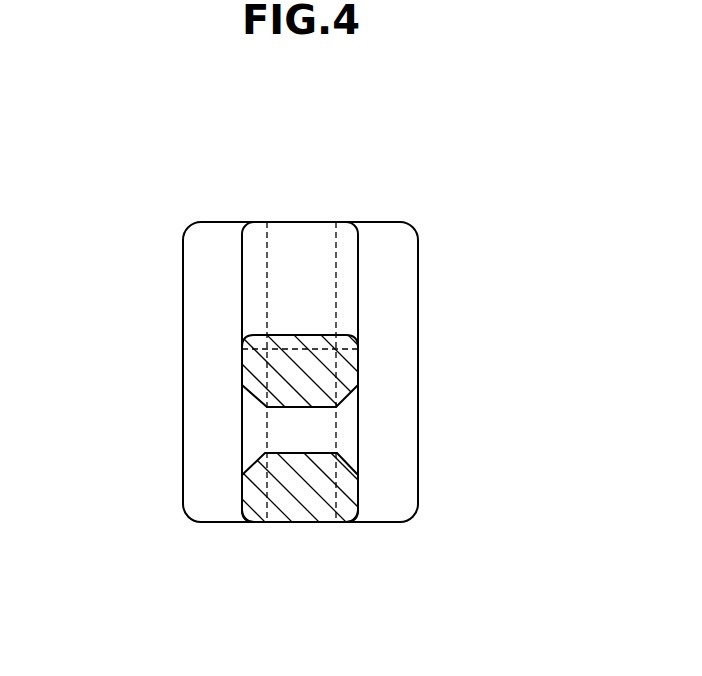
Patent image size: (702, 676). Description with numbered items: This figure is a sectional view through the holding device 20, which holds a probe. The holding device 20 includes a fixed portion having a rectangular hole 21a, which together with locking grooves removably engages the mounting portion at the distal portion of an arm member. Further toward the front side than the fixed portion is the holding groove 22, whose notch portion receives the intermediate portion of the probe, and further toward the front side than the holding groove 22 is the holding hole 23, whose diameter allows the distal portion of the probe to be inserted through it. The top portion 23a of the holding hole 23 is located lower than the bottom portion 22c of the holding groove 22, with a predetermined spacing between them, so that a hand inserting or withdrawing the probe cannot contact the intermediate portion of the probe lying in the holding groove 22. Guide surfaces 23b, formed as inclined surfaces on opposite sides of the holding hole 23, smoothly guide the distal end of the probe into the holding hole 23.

The holding device 20 is at (250, 170).
The rectangular hole 21a is at (318, 240).
The holding groove 22 is at (355, 272).
The bottom portion of the holding groove 22c is at (319, 343).
The holding hole 23 is at (300, 380).
The top portion of the holding hole 23a is at (280, 411).
The guide surface 23b is at (352, 457).